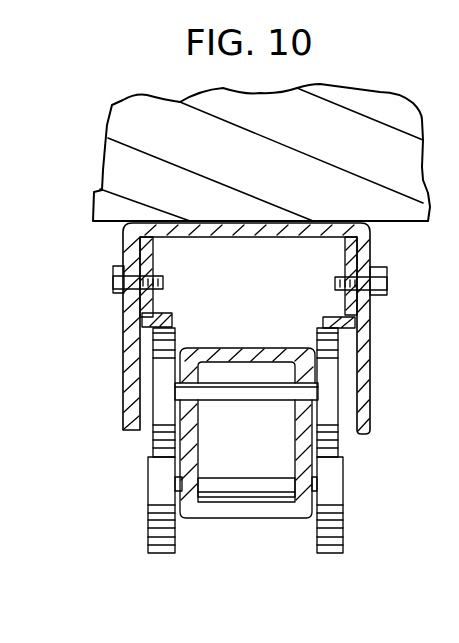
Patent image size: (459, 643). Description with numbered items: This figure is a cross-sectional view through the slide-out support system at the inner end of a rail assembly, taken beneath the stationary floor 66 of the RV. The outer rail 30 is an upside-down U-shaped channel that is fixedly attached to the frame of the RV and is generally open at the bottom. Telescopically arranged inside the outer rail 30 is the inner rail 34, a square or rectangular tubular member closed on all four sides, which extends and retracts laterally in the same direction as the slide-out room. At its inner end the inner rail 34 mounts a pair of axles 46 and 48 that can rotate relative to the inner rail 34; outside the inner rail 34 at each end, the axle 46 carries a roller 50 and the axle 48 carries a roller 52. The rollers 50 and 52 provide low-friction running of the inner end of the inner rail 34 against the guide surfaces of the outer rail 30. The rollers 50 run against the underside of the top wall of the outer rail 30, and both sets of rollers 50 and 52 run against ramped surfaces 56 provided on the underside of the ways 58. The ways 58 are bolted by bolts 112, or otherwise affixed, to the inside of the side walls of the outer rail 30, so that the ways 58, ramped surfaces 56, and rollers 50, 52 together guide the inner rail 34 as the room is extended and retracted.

The stationary floor 66 is at (123, 100).
The outer rail 30 is at (370, 388).
The way 58 is at (350, 258).
The bolt 112 is at (113, 285).
The ramped surface 56 is at (145, 340).
The roller 52 is at (317, 543).
The roller 50 is at (316, 335).
The axle 46 is at (240, 403).
The inner rail 34 is at (280, 520).
The axle 48 is at (268, 480).